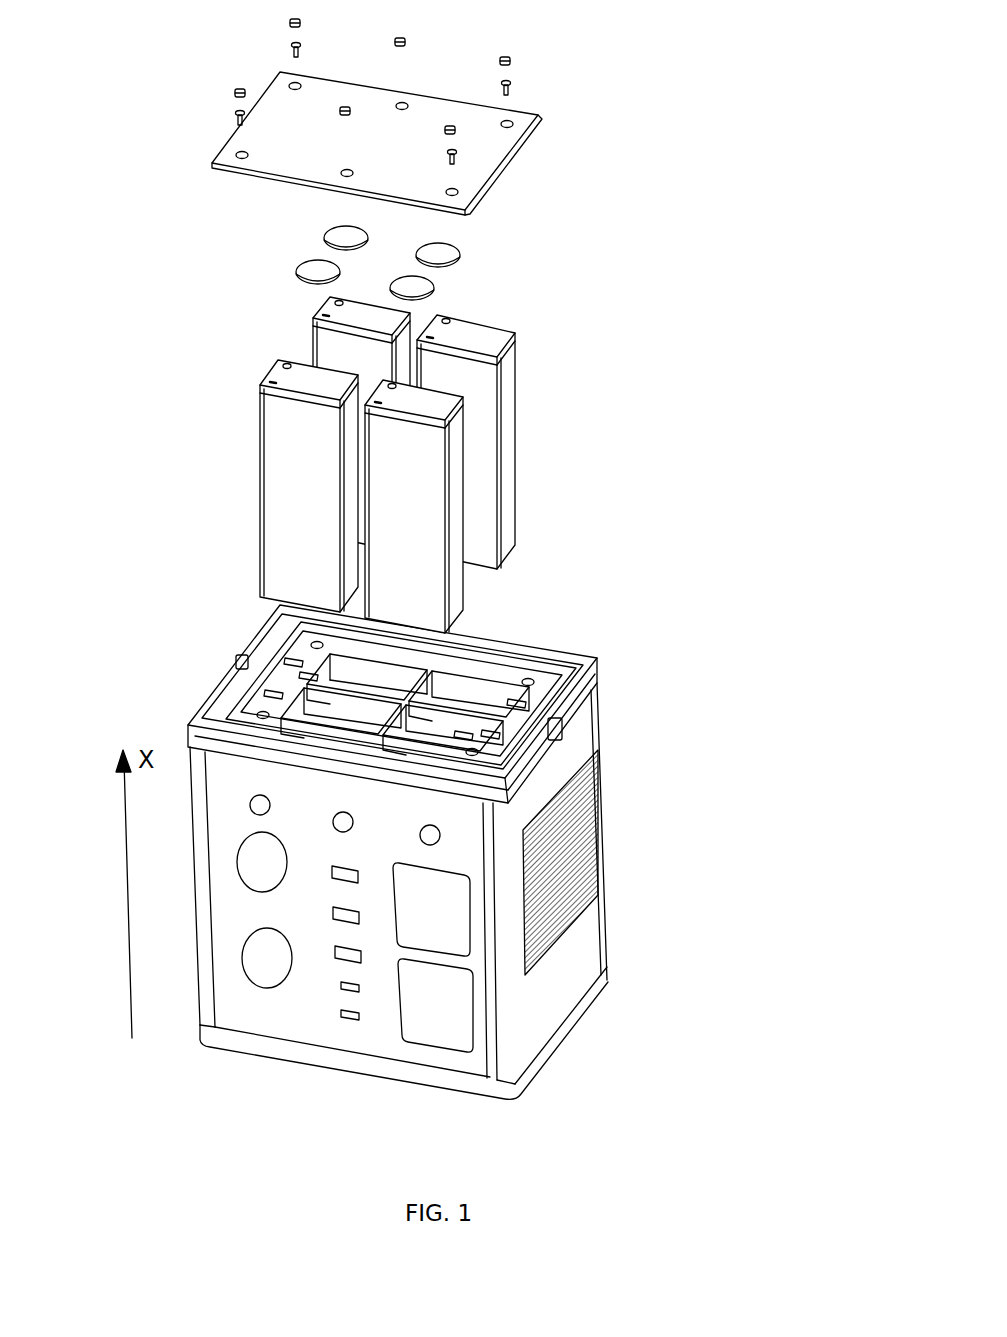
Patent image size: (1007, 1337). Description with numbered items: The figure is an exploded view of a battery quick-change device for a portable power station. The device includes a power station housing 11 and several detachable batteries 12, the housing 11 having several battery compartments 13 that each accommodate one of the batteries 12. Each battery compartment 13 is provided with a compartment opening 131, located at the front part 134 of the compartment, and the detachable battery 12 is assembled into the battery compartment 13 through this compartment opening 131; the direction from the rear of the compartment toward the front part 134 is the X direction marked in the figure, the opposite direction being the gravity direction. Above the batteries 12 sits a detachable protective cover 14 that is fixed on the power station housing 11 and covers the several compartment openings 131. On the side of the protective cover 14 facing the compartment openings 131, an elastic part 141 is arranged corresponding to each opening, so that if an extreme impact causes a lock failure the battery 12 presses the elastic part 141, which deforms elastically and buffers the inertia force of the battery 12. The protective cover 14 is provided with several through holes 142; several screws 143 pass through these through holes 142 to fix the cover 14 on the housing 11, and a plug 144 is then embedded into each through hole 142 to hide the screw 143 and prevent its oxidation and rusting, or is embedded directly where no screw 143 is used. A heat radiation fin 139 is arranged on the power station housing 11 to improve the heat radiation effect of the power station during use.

The power station housing 11 is at (439, 839).
The detachable battery 12 is at (457, 500).
The battery compartment 13 is at (445, 672).
The compartment opening 131 is at (460, 708).
The front part 134 is at (296, 678).
The heat radiation fin 139 is at (565, 867).
The protective cover 14 is at (439, 117).
The elastic part 141 is at (415, 290).
The through hole 142 is at (457, 191).
The screw 143 is at (455, 156).
The plug 144 is at (349, 109).